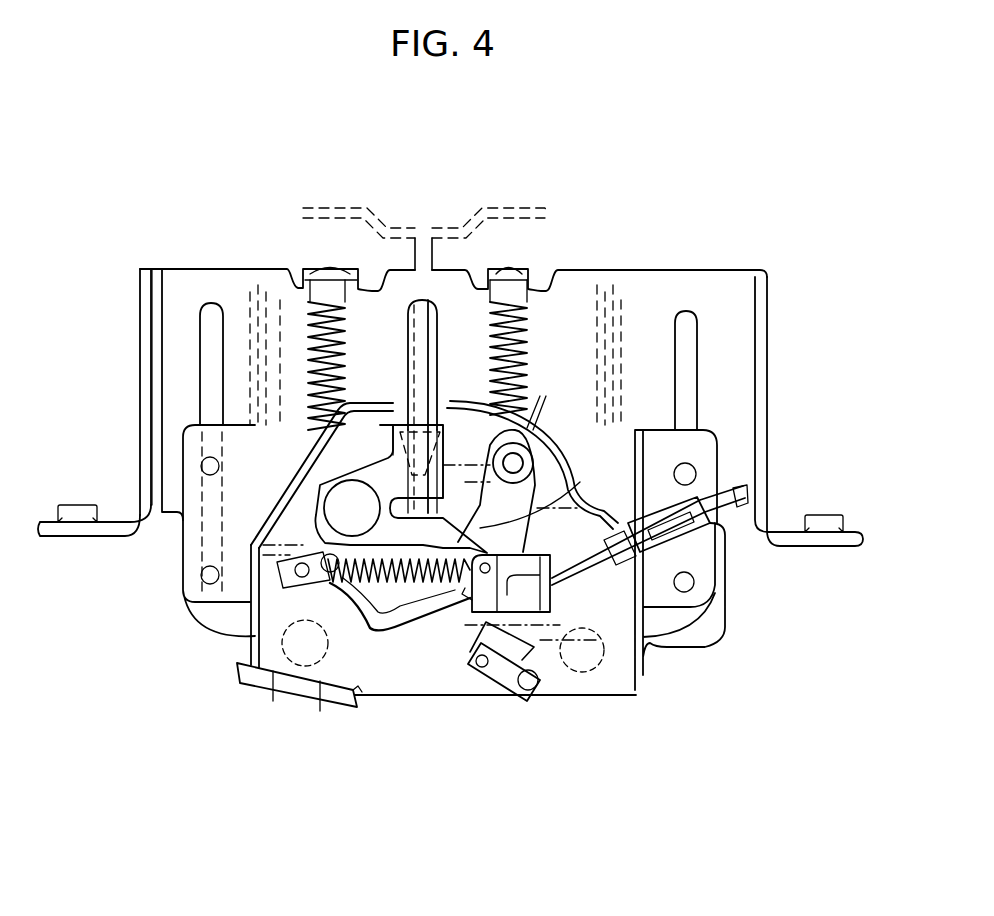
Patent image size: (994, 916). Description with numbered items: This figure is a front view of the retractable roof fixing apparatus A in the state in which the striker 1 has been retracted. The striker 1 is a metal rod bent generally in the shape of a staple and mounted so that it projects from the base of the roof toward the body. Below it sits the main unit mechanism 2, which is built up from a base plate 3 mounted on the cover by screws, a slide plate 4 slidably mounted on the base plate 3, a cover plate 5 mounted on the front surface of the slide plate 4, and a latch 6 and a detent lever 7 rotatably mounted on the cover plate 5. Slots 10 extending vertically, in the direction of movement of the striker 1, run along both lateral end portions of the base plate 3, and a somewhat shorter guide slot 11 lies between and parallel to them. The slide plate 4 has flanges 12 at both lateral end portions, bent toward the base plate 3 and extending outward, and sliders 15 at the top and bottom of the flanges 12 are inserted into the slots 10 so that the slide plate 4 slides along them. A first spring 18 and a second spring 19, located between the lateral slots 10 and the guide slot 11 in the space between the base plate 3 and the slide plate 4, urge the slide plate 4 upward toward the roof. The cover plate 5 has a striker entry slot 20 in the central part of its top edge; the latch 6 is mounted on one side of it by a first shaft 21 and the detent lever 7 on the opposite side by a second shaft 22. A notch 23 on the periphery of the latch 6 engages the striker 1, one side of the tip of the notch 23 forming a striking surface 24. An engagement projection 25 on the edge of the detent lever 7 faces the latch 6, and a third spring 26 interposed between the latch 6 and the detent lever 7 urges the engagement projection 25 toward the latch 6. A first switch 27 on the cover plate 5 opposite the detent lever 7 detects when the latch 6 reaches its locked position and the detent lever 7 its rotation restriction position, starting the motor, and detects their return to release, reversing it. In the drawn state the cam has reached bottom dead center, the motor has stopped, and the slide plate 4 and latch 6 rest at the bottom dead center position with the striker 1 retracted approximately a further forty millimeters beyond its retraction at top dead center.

The striker 1 is at (435, 257).
The main unit mechanism 2 is at (104, 343).
The base plate 3 is at (735, 272).
The slide plate 4 is at (172, 576).
The cover plate 5 is at (268, 629).
The latch 6 is at (378, 645).
The detent lever 7 is at (565, 601).
The slots 10 is at (212, 303).
The guide slot 11 is at (408, 308).
The flanges 12 is at (703, 451).
The sliders 15 is at (688, 583).
The first spring 18 is at (310, 342).
The second spring 19 is at (522, 342).
The striker entry slot 20 is at (398, 410).
The first shaft 21 is at (338, 510).
The second shaft 22 is at (518, 455).
The notch 23 is at (447, 472).
The striking surface 24 is at (447, 582).
The engagement projection 25 is at (548, 497).
The third spring 26 is at (416, 600).
The first switch 27 is at (467, 620).
The retractable roof fixing apparatus A is at (806, 243).